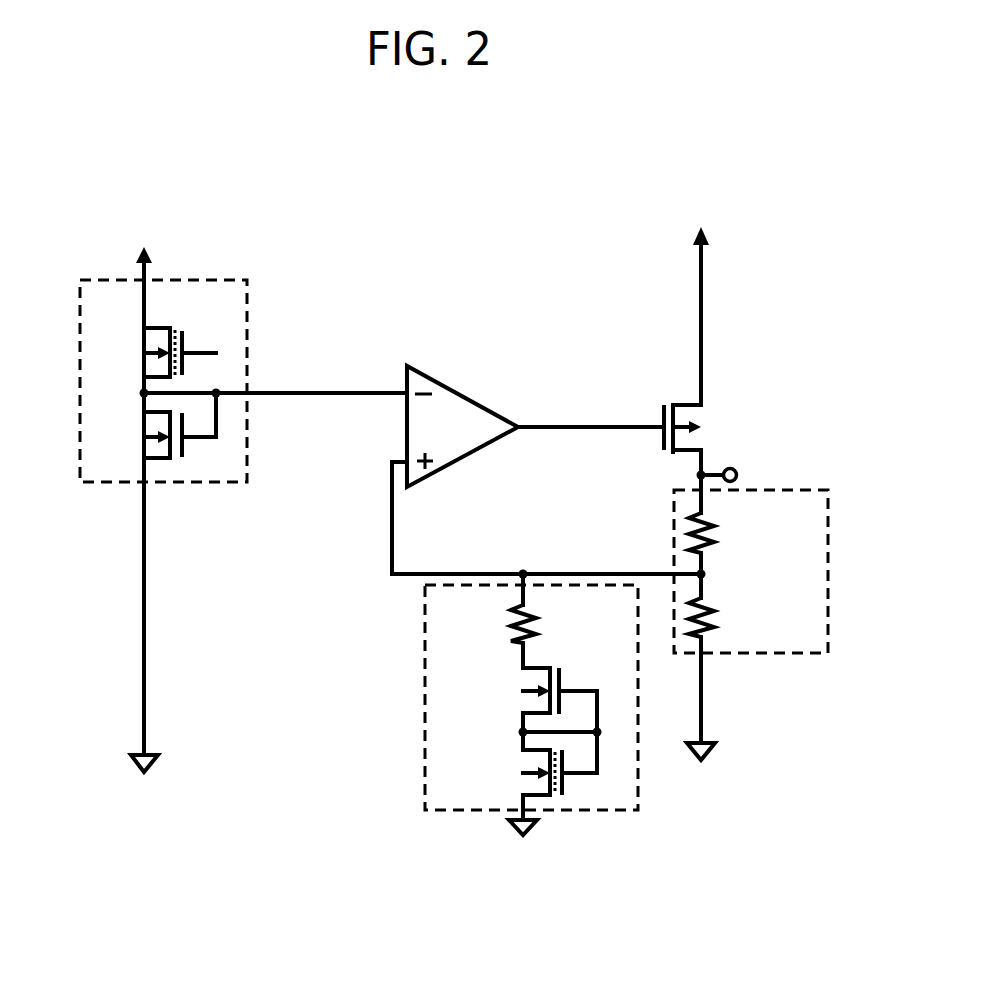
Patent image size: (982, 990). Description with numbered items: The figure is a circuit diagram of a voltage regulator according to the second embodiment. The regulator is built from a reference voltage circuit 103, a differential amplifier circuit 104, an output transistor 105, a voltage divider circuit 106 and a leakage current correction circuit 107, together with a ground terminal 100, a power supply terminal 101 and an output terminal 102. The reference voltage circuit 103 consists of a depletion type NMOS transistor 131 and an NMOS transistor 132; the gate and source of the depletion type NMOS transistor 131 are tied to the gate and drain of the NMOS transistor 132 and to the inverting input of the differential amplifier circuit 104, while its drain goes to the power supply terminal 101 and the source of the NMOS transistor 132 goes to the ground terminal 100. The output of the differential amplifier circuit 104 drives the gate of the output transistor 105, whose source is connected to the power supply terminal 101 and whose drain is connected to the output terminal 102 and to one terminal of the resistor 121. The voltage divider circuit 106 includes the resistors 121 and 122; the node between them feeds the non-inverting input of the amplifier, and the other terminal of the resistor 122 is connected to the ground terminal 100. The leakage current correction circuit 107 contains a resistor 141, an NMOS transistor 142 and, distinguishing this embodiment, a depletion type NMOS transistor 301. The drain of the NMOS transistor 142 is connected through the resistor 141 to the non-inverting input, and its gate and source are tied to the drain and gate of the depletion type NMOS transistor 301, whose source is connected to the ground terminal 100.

The ground terminal 100 is at (130, 752).
The power supply terminal 101 is at (697, 232).
The output terminal 102 is at (732, 466).
The reference voltage circuit 103 is at (165, 284).
The differential amplifier circuit 104 is at (455, 392).
The output transistor 105 is at (703, 422).
The voltage divider circuit 106 is at (755, 648).
The leakage current correction circuit 107 is at (437, 660).
The resistor 121 is at (713, 530).
The resistor 122 is at (715, 613).
The depletion type NMOS transistor 131 is at (160, 329).
The NMOS transistor 132 is at (162, 460).
The resistor 141 is at (537, 630).
The NMOS transistor 142 is at (523, 705).
The depletion type NMOS transistor 301 is at (525, 765).